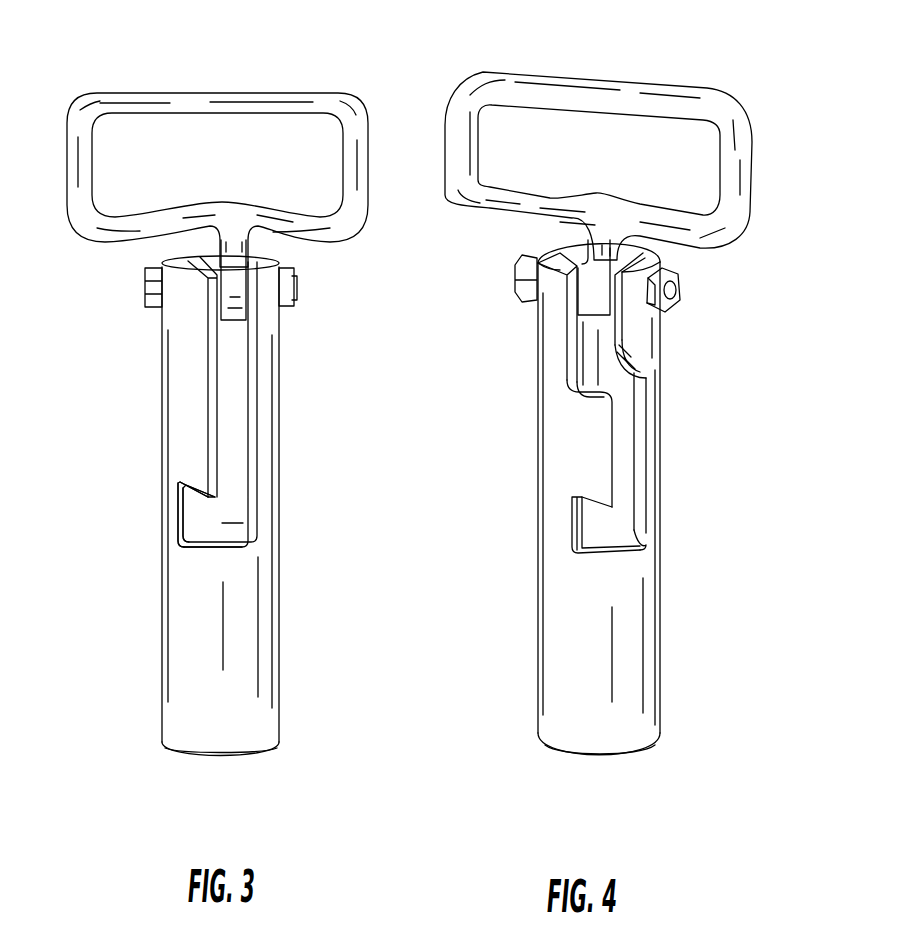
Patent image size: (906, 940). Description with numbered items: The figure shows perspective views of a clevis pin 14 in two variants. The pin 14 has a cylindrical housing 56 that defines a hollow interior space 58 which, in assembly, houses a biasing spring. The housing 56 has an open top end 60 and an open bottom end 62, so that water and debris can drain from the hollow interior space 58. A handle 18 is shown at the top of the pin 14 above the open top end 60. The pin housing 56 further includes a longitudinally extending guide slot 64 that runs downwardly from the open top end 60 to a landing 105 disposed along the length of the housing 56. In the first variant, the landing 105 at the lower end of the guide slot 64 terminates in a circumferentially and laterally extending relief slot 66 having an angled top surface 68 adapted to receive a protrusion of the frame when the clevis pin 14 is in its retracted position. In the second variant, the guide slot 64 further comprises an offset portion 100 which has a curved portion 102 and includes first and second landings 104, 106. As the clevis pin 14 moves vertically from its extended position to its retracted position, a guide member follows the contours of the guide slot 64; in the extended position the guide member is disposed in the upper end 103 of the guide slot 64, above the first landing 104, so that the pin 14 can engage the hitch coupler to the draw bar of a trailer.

In FIG. 3, the clevis pin 14 is at (290, 378).
In FIG. 4, the clevis pin 14 is at (686, 472).
In FIG. 3, the handle 18 is at (318, 93).
In FIG. 4, the handle 18 is at (690, 85).
In FIG. 3, the cylindrical housing 56 is at (238, 620).
In FIG. 4, the cylindrical housing 56 is at (628, 683).
In FIG. 3, the hollow interior space 58 is at (232, 509).
In FIG. 3, the open top end 60 is at (192, 258).
In FIG. 4, the open top end 60 is at (537, 258).
In FIG. 3, the open bottom end 62 is at (230, 757).
In FIG. 4, the open bottom end 62 is at (598, 765).
In FIG. 3, the guide slot 64 is at (233, 423).
In FIG. 4, the guide slot 64 is at (592, 370).
In FIG. 3, the relief slot 66 is at (183, 540).
In FIG. 4, the relief slot 66 is at (578, 547).
In FIG. 3, the angled top surface 68 is at (182, 483).
In FIG. 4, the angled top surface 68 is at (600, 510).
In FIG. 4, the offset portion 100 is at (627, 465).
In FIG. 4, the curved portion 102 is at (648, 376).
In FIG. 4, the upper end of guide slot 103 is at (595, 340).
In FIG. 4, the first landing 104 is at (590, 395).
In FIG. 3, the landing 105 is at (208, 546).
In FIG. 4, the second landing 106 is at (648, 545).